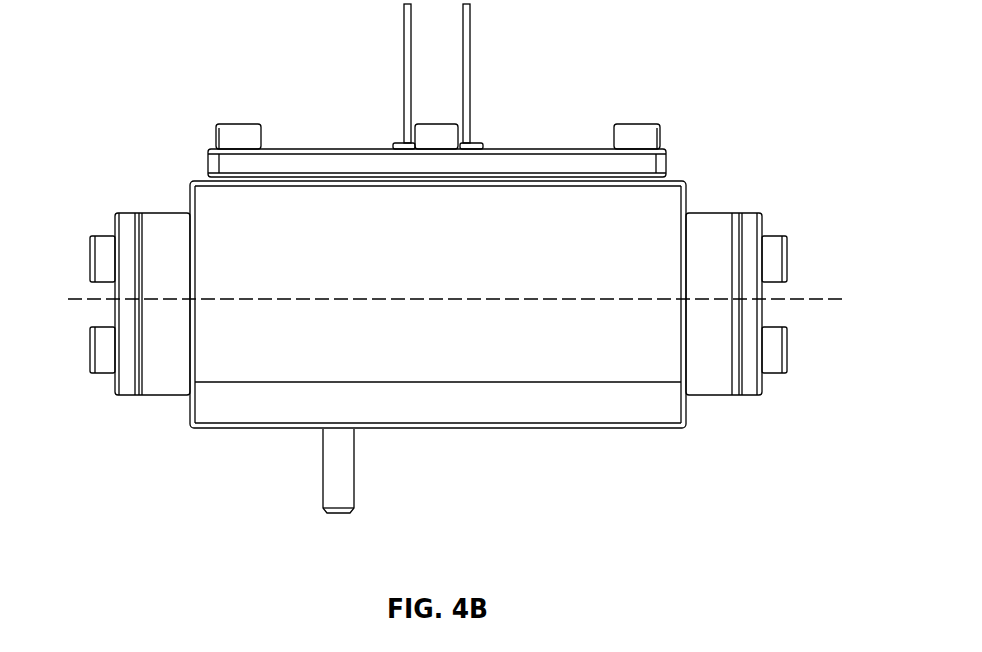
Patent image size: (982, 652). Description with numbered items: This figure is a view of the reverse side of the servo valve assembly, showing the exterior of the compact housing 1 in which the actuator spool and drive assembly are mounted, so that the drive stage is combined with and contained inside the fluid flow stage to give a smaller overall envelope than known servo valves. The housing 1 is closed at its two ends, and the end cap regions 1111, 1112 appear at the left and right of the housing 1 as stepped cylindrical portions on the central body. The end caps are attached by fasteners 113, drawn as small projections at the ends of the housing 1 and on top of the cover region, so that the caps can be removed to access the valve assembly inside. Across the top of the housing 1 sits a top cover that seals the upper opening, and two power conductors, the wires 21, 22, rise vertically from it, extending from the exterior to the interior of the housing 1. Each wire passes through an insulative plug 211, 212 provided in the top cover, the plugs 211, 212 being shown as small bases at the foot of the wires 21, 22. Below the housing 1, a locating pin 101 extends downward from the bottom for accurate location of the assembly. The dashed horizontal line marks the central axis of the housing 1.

The housing 1 is at (294, 355).
The locating pin 101 is at (342, 478).
The fasteners 113 is at (238, 137).
The left end flange 1111 is at (138, 397).
The right end flange 1112 is at (735, 397).
The power conductor 21 is at (403, 47).
The power conductor 22 is at (473, 42).
The insulative plug 211 is at (397, 141).
The insulative plug 212 is at (476, 141).